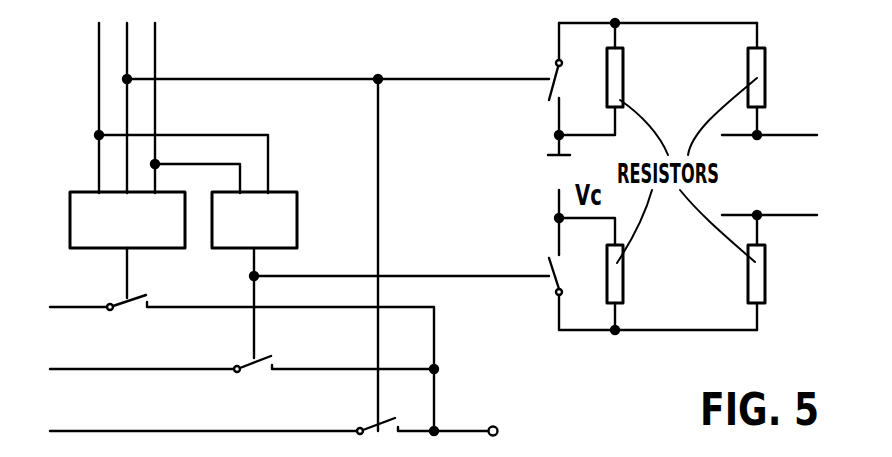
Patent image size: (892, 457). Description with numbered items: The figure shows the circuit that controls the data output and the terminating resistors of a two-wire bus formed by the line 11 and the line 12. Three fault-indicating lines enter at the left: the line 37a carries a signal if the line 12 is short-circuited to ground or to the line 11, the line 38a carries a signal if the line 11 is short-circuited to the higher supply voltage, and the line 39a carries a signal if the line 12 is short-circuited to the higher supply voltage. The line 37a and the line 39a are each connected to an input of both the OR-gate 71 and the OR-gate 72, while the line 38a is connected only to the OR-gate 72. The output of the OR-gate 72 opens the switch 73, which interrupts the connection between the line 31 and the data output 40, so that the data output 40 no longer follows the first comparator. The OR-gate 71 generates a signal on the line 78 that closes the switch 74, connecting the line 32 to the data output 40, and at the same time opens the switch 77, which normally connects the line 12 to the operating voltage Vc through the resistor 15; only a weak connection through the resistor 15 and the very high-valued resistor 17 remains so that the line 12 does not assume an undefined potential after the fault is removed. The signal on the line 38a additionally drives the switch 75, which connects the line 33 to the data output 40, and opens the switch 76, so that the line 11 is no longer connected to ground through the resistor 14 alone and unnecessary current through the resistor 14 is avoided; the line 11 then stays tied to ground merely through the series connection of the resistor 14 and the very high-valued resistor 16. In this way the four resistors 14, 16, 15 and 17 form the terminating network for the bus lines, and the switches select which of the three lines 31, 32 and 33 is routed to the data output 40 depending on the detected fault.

The line 37a is at (98, 42).
The line 38a is at (126, 115).
The line 39a is at (156, 124).
The OR-gate 72 is at (96, 250).
The OR-gate 71 is at (297, 203).
The switch 73 is at (146, 292).
The switch 74 is at (267, 356).
The switch 75 is at (389, 422).
The switch 76 is at (547, 93).
The switch 77 is at (545, 259).
The line 78 is at (423, 276).
The line 31 is at (96, 308).
The line 32 is at (131, 369).
The line 33 is at (104, 431).
The data output 40 is at (497, 427).
The resistor 16 is at (625, 99).
The resistor 14 is at (767, 97).
The resistor 17 is at (625, 292).
The resistor 15 is at (767, 292).
The line 11 is at (780, 136).
The line 12 is at (795, 214).